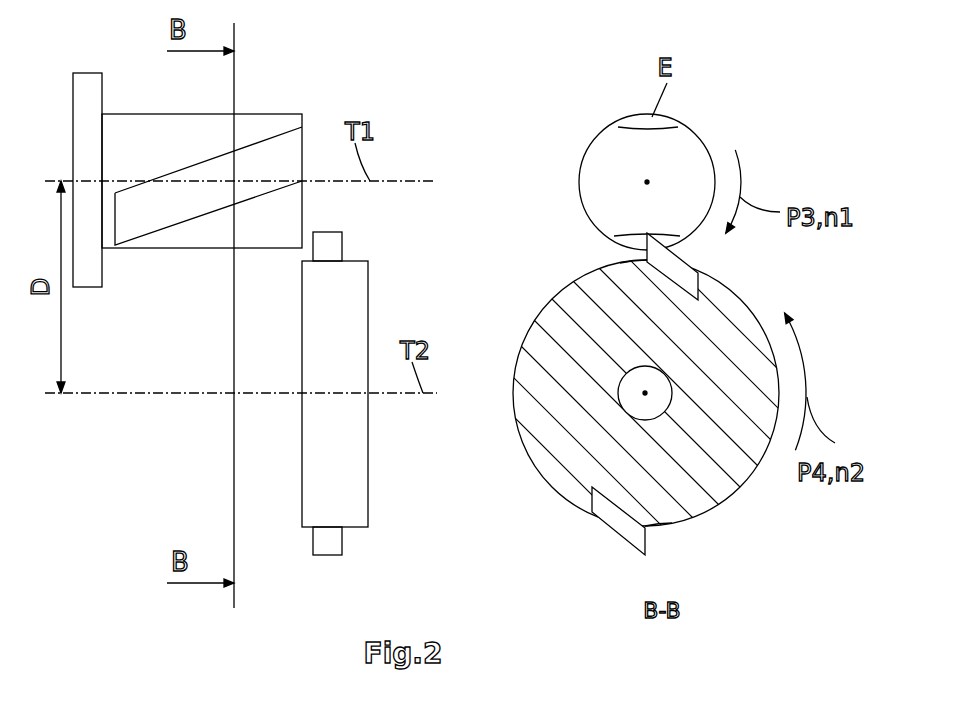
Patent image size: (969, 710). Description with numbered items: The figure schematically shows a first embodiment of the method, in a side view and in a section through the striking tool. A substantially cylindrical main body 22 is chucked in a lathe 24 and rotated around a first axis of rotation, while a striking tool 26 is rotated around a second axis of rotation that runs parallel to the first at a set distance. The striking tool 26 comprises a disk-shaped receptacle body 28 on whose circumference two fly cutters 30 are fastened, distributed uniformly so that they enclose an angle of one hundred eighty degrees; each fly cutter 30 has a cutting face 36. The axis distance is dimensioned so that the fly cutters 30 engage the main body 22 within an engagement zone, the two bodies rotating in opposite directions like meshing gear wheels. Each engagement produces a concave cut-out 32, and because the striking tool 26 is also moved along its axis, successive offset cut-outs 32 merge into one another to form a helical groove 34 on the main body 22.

The main body 22 is at (273, 114).
The lathe 24 is at (89, 73).
The striking tool 26 is at (581, 393).
The receptacle body 28 is at (318, 493).
The fly cutter 30 is at (342, 242).
The cut-out 32 is at (173, 208).
The groove 34 is at (648, 118).
The cutting face 36 is at (645, 252).